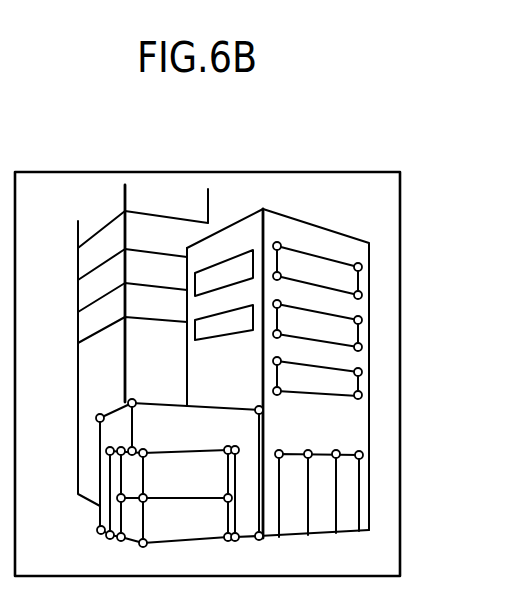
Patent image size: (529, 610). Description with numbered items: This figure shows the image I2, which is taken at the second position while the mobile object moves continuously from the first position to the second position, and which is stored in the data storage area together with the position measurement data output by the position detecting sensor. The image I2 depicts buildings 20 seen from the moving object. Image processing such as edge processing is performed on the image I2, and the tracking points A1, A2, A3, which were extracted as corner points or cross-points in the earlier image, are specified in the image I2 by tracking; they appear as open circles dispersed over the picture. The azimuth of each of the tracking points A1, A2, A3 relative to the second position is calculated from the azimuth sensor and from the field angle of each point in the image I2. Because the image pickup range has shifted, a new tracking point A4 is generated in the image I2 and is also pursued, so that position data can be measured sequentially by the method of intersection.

The image I2 is at (250, 172).
The building (subject) 20 is at (113, 412).
The tracking point A1 is at (96, 418).
The tracking point A2 is at (97, 529).
The tracking point A3 is at (256, 408).
The tracking point A4 is at (363, 394).